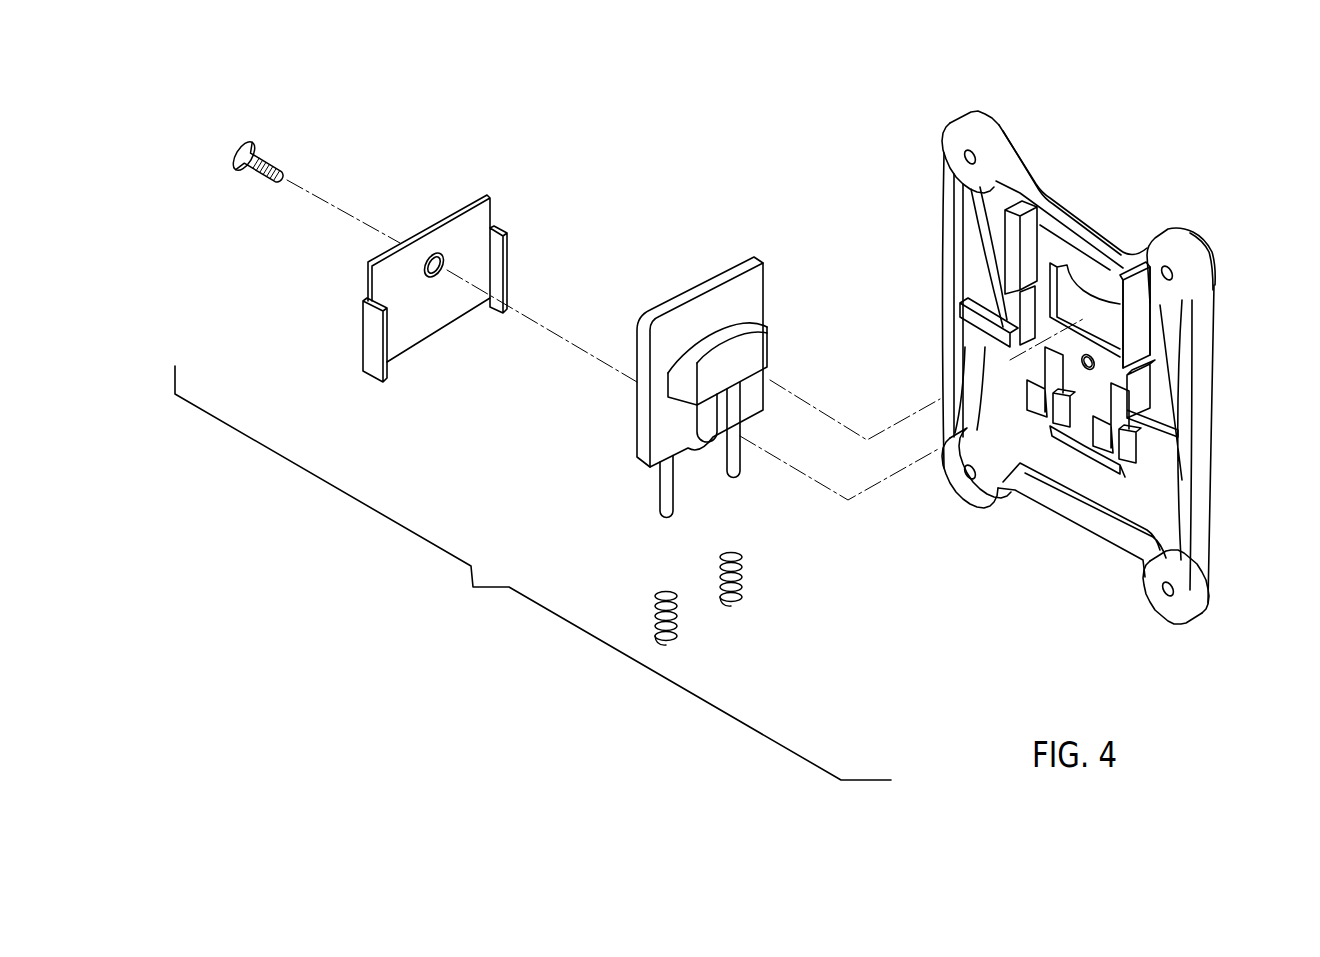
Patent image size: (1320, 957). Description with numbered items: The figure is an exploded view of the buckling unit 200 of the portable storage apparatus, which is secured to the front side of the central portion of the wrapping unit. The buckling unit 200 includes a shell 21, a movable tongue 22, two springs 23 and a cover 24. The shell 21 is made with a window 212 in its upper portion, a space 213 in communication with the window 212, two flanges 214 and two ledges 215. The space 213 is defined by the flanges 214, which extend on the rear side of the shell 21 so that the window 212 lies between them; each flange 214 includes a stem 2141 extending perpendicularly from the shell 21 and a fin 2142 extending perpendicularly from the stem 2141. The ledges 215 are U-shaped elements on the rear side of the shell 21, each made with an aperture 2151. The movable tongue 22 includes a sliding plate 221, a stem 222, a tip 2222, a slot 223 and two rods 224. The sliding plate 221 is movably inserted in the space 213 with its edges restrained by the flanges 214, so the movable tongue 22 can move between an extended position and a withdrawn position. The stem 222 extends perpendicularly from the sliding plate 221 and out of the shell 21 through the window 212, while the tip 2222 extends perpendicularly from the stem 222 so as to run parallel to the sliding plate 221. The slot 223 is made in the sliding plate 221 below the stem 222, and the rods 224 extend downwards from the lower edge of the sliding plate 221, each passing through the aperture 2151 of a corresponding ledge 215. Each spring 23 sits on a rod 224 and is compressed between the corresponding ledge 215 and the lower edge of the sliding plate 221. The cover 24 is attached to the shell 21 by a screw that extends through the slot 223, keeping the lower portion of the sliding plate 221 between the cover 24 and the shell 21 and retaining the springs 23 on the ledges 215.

The buckling unit 200 is at (1146, 78).
The shell 21 is at (1198, 493).
The window 212 is at (1067, 265).
The space 213 is at (1098, 268).
The flanges 214 is at (1150, 307).
The stem 2141 is at (1143, 315).
The fin 2142 is at (1127, 352).
The ledges 215 is at (1037, 380).
The aperture 2151 is at (1115, 450).
The movable tongue 22 is at (633, 280).
The sliding plate 221 is at (733, 265).
The stem 222 is at (777, 340).
The tip 2222 is at (743, 320).
The slot 223 is at (713, 407).
The rods 224 is at (668, 500).
The springs 23 is at (656, 604).
The cover 24 is at (454, 190).